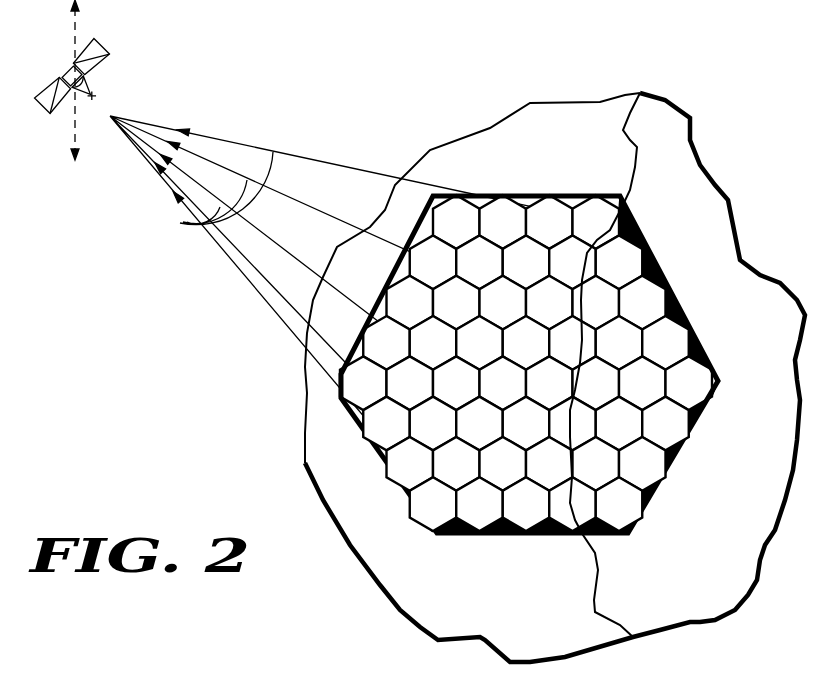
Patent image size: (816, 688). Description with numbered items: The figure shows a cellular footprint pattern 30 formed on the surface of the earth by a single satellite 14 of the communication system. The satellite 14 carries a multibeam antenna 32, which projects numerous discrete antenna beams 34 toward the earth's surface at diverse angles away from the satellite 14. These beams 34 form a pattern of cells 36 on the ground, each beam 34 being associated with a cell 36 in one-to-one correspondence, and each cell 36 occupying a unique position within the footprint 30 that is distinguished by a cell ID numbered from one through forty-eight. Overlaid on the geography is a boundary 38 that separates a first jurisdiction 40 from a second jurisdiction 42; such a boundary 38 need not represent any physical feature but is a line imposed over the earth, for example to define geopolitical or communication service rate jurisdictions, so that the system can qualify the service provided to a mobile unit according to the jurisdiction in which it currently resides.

The satellite 14 is at (100, 56).
The multibeam antenna 32 is at (106, 100).
The antenna beams 34 is at (377, 310).
The cells 36 is at (418, 240).
The boundary 38 is at (638, 147).
The first jurisdiction 40 is at (737, 223).
The second jurisdiction 42 is at (479, 152).
The cellular footprint pattern 30 is at (701, 395).